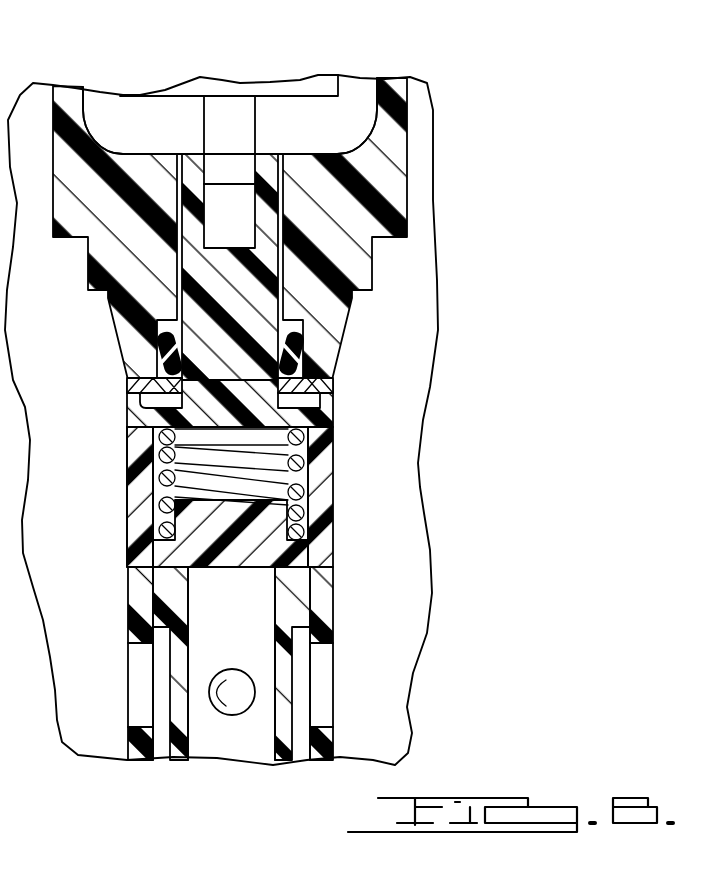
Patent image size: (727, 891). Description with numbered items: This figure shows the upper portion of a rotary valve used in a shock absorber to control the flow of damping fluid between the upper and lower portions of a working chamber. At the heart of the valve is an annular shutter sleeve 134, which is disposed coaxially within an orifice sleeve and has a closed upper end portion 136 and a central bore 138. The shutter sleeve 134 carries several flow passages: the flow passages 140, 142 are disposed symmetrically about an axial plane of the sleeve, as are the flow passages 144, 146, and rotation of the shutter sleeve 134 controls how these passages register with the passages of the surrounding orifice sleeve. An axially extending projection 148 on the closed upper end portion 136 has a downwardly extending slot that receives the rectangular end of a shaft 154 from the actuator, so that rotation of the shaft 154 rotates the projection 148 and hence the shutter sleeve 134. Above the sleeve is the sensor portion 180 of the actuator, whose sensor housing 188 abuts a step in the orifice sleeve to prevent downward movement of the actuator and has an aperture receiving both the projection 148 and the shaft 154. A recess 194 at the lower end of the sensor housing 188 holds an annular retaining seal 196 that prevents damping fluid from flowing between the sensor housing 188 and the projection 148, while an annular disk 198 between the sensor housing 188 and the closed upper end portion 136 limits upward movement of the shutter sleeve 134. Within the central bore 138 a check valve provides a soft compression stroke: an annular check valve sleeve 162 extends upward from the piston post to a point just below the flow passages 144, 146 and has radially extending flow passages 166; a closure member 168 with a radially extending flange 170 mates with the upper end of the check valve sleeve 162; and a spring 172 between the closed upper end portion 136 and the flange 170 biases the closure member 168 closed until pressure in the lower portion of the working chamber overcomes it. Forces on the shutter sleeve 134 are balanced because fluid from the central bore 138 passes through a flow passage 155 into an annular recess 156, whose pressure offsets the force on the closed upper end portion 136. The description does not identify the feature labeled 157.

The shaft 154 is at (237, 137).
The sensor portion 180 is at (352, 130).
The sensor housing 188 is at (377, 175).
The axially extending projection 148 is at (260, 302).
The recess 194 is at (162, 330).
The annular retaining seal 196 is at (310, 367).
The annular recess 156 is at (150, 380).
The annular disk 198 is at (327, 387).
The flow passage 155 is at (170, 413).
The closed upper end portion 136 is at (275, 418).
The spring seat 157 is at (145, 450).
The annular shutter sleeve 134 is at (127, 465).
The flow passage 144 is at (127, 534).
The flow passage 146 is at (333, 523).
The central bore 138 is at (303, 490).
The spring 172 is at (302, 462).
The radially extending flange 170 is at (283, 546).
The closure member 168 is at (238, 548).
The annular check valve sleeve 162 is at (292, 588).
The flow passage 142 is at (137, 667).
The flow passage 140 is at (318, 699).
The flow passages 166 is at (282, 697).